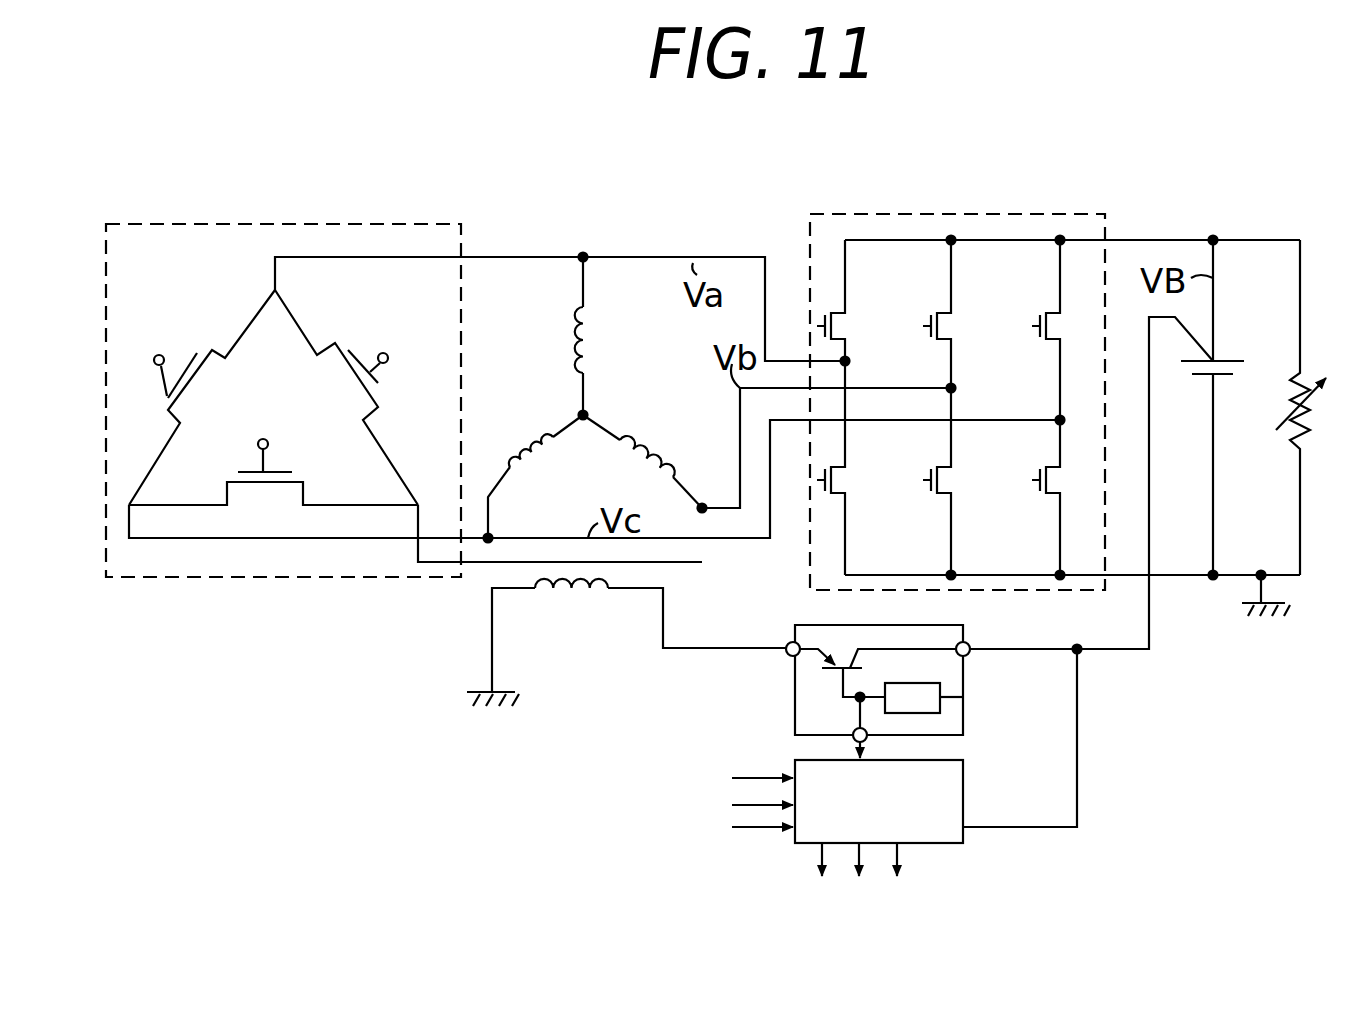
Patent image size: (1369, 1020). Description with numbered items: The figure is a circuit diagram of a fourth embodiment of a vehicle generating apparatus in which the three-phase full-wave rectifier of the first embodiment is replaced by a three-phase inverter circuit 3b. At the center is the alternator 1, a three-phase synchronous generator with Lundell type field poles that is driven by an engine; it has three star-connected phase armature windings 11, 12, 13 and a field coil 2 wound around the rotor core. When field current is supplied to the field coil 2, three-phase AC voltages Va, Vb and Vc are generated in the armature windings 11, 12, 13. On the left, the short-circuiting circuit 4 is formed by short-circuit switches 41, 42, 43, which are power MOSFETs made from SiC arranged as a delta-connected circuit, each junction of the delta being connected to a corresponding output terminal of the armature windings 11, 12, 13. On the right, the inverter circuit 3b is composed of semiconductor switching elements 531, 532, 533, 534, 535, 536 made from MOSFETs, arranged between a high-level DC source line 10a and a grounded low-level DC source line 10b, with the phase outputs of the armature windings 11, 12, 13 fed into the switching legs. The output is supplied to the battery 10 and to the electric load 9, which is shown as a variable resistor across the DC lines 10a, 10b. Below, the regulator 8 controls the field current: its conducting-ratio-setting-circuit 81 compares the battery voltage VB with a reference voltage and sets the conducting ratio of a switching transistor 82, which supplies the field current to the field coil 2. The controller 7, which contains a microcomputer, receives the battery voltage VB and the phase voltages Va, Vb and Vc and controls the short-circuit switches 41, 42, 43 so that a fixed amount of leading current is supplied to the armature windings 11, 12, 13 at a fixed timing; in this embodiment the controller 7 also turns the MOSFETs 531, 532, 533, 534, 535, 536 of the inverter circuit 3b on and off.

The alternator 1 is at (551, 345).
The field coil 2 is at (567, 607).
The three-phase inverter circuit 3b is at (988, 214).
The short-circuiting circuit 4 is at (373, 224).
The controller 7 is at (812, 778).
The regulator 8 is at (877, 666).
The electric load 9 is at (1312, 423).
The battery 10 is at (1226, 360).
The high-level DC source line 10a is at (1153, 240).
The low-level DC source line 10b is at (1173, 579).
The armature winding 11 is at (595, 310).
The armature winding 12 is at (648, 445).
The armature winding 13 is at (527, 438).
The short-circuit switch 41 is at (376, 413).
The short-circuit switch 42 is at (303, 484).
The short-circuit switch 43 is at (168, 400).
The conducting-ratio-setting-circuit 81 is at (928, 698).
The switching transistor 82 is at (842, 645).
The semiconductor switching element 531 is at (848, 332).
The semiconductor switching element 532 is at (951, 332).
The semiconductor switching element 533 is at (1050, 343).
The semiconductor switching element 534 is at (838, 483).
The semiconductor switching element 535 is at (978, 477).
The semiconductor switching element 536 is at (1043, 500).